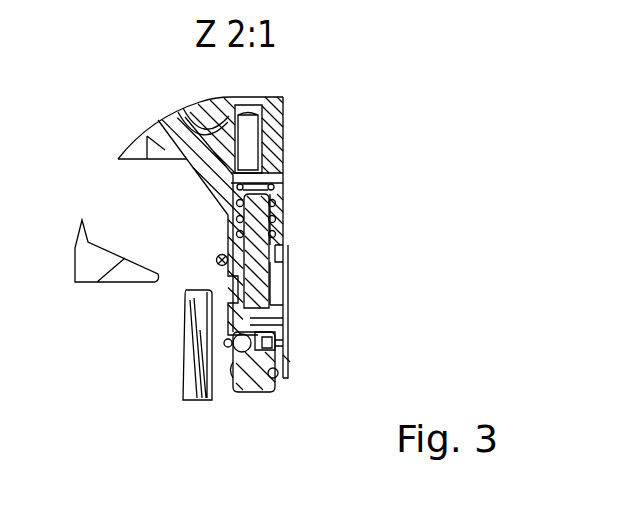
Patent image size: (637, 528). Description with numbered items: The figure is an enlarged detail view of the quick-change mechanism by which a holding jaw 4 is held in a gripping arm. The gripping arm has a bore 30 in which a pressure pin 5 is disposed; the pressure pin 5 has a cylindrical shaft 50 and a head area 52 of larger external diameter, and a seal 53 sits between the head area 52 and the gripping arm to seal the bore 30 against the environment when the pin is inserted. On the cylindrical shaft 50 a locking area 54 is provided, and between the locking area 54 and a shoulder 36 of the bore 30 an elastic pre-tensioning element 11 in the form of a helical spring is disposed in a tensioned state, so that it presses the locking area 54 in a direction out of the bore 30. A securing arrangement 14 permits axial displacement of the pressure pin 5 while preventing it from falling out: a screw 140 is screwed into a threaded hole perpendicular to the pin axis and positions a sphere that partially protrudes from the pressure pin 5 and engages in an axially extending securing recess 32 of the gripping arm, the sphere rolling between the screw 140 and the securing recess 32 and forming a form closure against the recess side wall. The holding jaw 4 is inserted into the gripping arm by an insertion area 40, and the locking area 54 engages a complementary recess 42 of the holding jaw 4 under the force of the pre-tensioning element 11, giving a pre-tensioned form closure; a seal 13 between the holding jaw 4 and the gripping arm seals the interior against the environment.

The holding jaw 4 is at (184, 395).
The pressure pin 5 is at (268, 398).
The pre-tensioning element 11 is at (273, 200).
The seal 13 is at (217, 257).
The securing arrangement 14 is at (290, 362).
The bore 30 is at (270, 182).
The securing recess 32 is at (281, 302).
The shoulder 36 is at (266, 172).
The insertion area 40 is at (270, 282).
The recess 42 is at (230, 245).
The cylindrical shaft 50 is at (262, 320).
The head area 52 is at (252, 383).
The seal 53 is at (276, 377).
The locking area 54 is at (284, 251).
The screw 140 is at (281, 342).